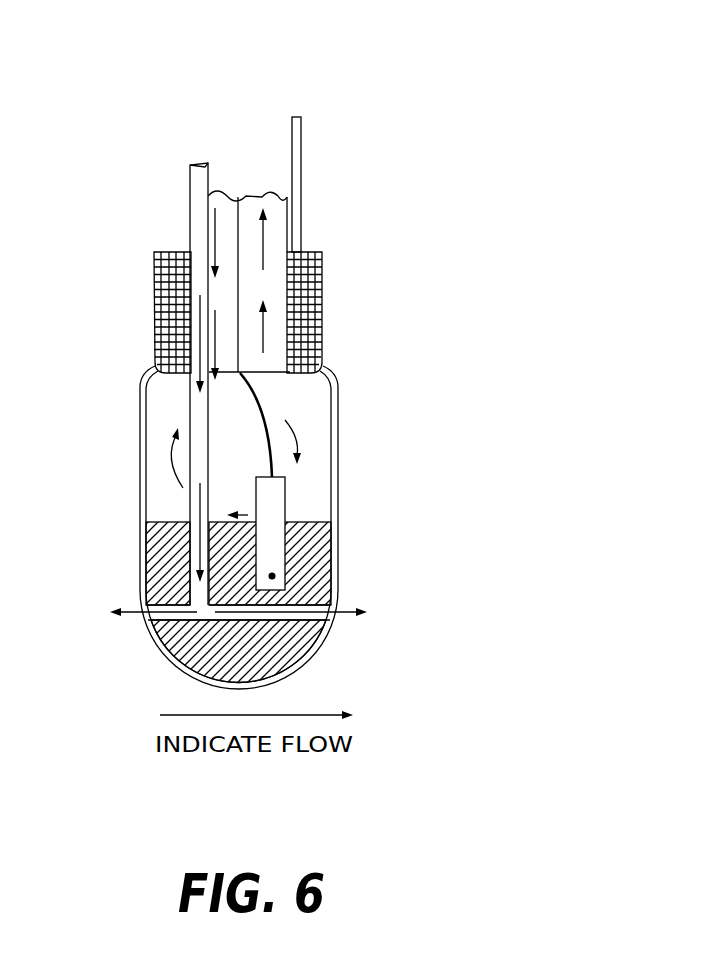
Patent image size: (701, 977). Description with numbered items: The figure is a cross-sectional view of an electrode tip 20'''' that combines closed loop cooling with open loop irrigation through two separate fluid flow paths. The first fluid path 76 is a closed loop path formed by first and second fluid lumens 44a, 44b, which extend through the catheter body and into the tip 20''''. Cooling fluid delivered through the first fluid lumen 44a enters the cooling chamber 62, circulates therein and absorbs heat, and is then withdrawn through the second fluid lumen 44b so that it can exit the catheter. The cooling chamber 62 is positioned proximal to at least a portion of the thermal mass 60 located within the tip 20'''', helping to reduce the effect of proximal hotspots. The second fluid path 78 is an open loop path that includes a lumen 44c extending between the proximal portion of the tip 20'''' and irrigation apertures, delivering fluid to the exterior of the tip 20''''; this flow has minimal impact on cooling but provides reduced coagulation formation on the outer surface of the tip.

The tip 20'''' is at (326, 388).
The first fluid lumen 44a is at (229, 192).
The second fluid lumen 44b is at (262, 195).
The lumen 44c is at (186, 232).
The first fluid path 76 is at (263, 288).
The cooling chamber 62 is at (252, 451).
The thermal mass 60 is at (312, 567).
The fluid path 78 is at (137, 612).